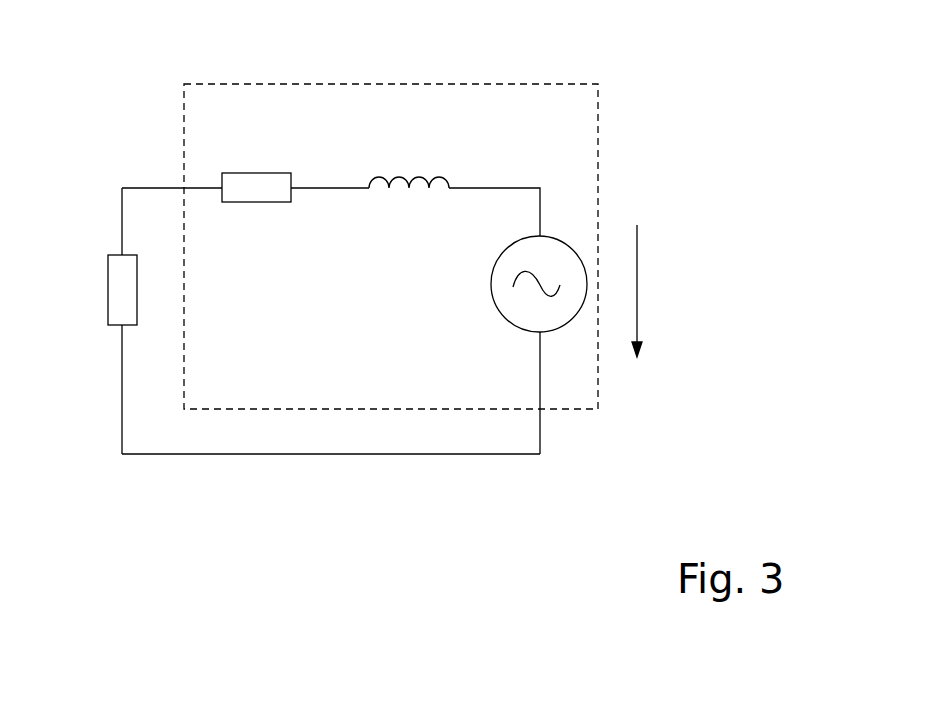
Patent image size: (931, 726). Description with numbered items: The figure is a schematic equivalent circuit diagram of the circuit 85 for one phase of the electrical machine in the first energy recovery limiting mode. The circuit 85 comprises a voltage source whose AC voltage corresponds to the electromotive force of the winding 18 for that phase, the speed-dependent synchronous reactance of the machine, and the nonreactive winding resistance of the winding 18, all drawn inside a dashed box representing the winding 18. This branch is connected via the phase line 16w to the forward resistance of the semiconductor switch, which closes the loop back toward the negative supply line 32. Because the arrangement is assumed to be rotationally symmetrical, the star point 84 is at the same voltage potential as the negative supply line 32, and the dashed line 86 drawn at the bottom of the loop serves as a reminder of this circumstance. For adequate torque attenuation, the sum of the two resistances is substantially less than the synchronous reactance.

The circuit 85 is at (657, 31).
The winding 18 is at (598, 117).
The star point 84 is at (540, 366).
The phase line 16w is at (143, 187).
The negative supply line 32 is at (122, 403).
The dashed line 86 is at (330, 455).